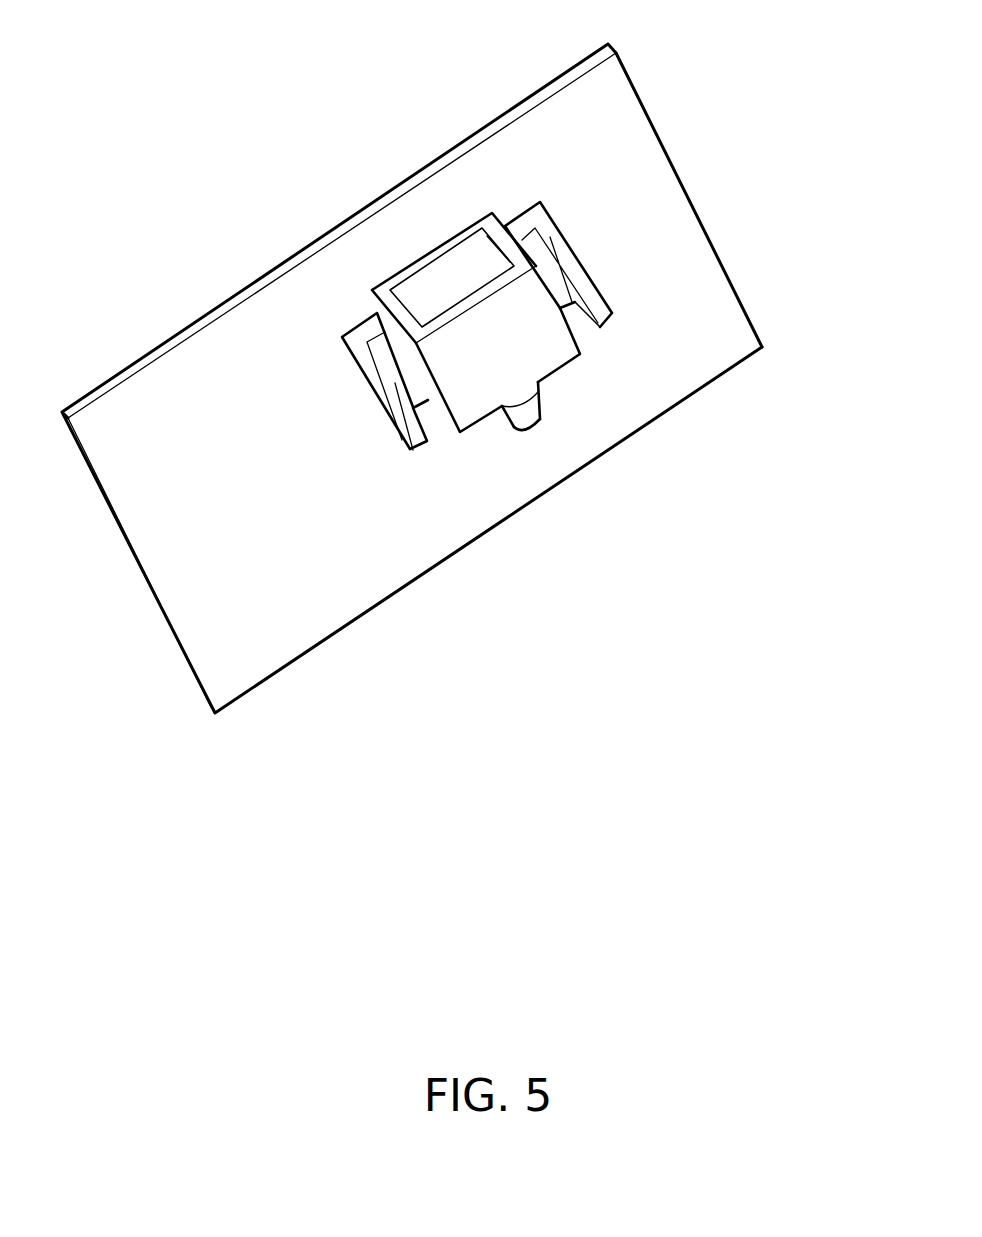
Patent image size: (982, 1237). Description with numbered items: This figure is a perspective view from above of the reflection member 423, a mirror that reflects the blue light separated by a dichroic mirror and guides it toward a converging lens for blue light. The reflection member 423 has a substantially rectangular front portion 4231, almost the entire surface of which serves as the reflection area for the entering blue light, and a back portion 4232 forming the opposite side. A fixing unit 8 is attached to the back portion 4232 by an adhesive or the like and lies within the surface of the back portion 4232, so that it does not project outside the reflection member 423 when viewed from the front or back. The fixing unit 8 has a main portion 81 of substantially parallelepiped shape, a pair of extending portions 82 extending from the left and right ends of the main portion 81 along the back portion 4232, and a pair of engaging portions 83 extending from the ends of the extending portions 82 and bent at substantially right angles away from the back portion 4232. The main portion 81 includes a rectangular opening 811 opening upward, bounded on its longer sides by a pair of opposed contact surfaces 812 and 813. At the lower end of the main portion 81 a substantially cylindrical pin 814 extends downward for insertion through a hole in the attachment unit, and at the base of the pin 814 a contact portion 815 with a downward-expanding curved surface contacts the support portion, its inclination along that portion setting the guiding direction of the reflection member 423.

The reflection member 423 is at (441, 376).
The front portion 4231 is at (220, 225).
The back portion 4232 is at (716, 293).
The fixing unit 8 is at (593, 194).
The main portion 81 is at (491, 352).
The opening 811 is at (418, 258).
The contact surface 812 is at (450, 262).
The contact surface 813 is at (448, 300).
The pin 814 is at (528, 417).
The contact portion 815 is at (535, 390).
The extending portion 82 is at (383, 345).
The engaging portion 83 is at (385, 423).